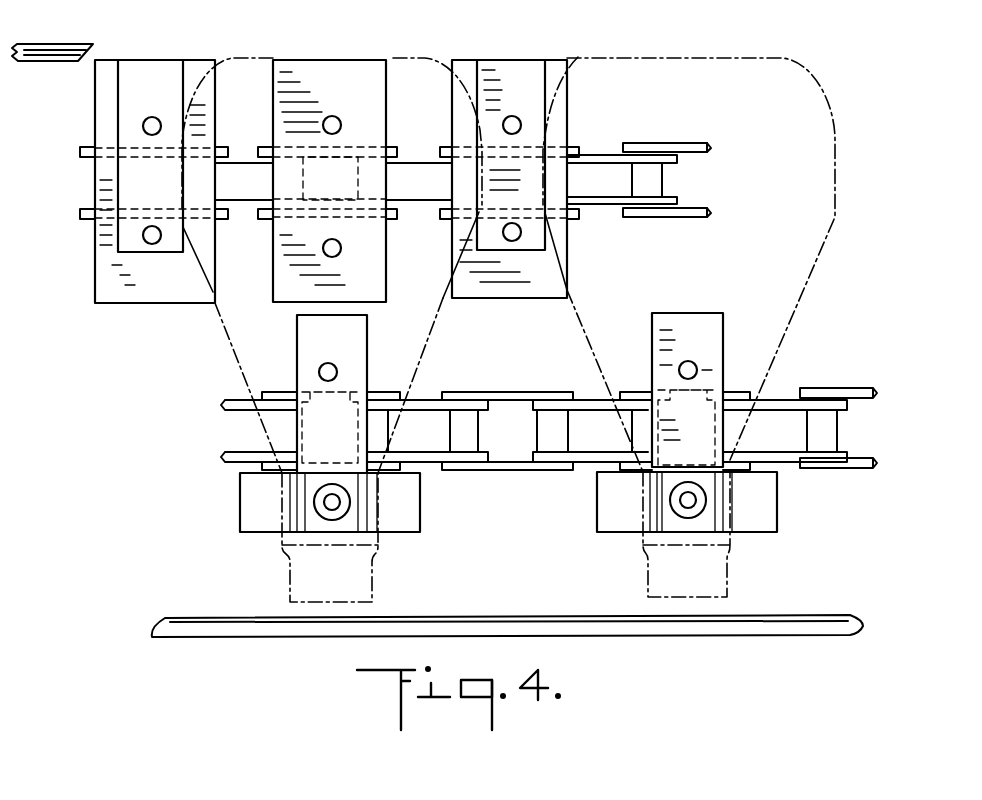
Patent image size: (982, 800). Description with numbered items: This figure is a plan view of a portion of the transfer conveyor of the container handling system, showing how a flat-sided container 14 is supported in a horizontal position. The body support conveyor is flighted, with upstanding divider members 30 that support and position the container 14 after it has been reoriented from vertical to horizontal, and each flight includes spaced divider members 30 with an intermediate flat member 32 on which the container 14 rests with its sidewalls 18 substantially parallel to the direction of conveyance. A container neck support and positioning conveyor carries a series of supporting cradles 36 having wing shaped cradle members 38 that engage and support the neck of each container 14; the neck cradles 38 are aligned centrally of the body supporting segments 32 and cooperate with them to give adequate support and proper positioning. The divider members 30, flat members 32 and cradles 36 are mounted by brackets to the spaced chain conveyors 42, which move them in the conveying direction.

The flat-sided container 14 is at (370, 57).
The sidewall 18 is at (305, 72).
The divider member 30 is at (104, 62).
The intermediate flat member 32 is at (168, 72).
The supporting cradle 36 is at (290, 428).
The wing shaped cradle member 38 is at (240, 512).
The chain conveyor 42 is at (85, 222).